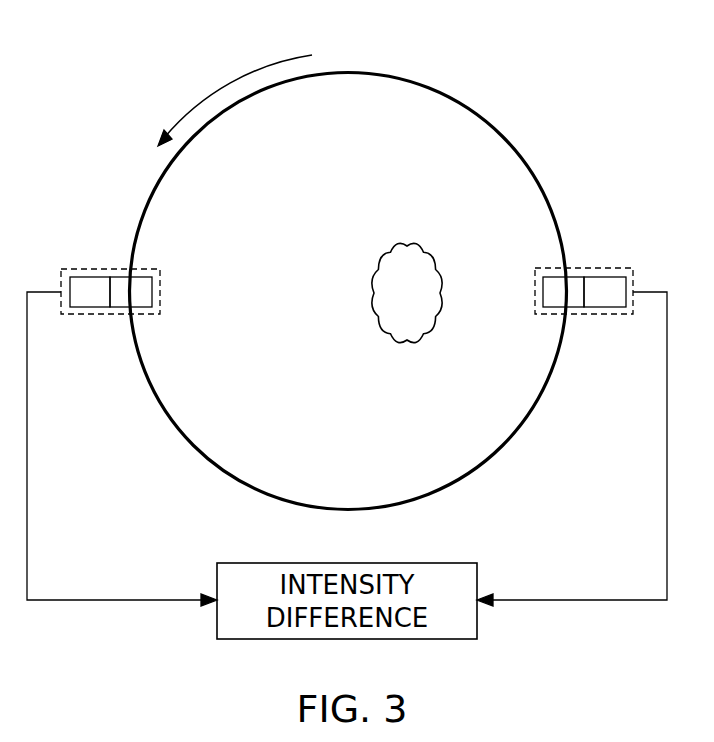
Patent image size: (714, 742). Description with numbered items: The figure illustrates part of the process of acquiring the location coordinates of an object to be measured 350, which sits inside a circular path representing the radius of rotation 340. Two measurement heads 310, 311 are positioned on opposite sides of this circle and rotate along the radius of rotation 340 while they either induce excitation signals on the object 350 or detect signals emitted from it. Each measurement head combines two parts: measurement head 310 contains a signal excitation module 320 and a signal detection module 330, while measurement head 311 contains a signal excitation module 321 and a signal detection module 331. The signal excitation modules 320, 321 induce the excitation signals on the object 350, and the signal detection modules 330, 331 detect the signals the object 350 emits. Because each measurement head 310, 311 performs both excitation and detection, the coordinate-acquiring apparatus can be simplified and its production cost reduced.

The measurement head 310 is at (607, 315).
The measurement head 311 is at (83, 315).
The signal excitation module 320 is at (577, 277).
The signal excitation module 321 is at (118, 308).
The signal detection module 330 is at (613, 277).
The signal detection module 331 is at (75, 277).
The radius of rotation 340 is at (473, 110).
The object to be measured 350 is at (393, 312).